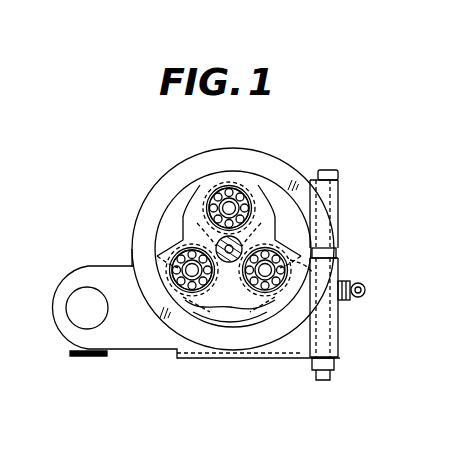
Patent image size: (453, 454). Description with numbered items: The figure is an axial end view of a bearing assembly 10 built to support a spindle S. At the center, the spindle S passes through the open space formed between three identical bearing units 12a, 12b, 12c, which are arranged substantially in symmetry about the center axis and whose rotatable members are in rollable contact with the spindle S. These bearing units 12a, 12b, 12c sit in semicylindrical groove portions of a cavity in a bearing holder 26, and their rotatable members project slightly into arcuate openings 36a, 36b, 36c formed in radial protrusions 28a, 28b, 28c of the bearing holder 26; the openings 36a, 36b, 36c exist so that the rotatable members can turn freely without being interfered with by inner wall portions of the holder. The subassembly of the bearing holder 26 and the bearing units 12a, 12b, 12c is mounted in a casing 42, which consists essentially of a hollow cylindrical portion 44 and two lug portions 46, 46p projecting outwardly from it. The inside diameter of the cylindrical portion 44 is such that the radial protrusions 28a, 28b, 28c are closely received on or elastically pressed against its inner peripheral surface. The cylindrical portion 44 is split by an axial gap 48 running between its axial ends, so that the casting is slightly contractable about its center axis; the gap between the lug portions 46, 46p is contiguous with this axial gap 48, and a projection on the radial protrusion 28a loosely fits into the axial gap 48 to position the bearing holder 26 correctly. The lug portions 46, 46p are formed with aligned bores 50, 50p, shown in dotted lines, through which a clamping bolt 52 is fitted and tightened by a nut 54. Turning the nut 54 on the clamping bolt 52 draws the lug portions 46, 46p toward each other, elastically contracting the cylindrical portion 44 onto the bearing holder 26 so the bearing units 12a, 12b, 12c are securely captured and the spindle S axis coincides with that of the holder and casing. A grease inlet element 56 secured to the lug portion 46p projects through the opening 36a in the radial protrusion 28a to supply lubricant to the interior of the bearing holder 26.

The bearing assembly 10 is at (142, 185).
The bearing holder 26 is at (184, 213).
The spindle S is at (197, 250).
The cylindrical portion 44 is at (132, 233).
The arcuate opening 36a is at (283, 318).
The arcuate opening 36b is at (203, 176).
The arcuate opening 36c is at (163, 265).
The bearing unit 12a is at (288, 299).
The bearing unit 12b is at (271, 187).
The bearing unit 12c is at (192, 300).
The radial protrusion 28a is at (316, 272).
The radial protrusion 28b is at (243, 186).
The radial protrusion 28c is at (183, 296).
The casing 42 is at (218, 359).
The lug portion 46 is at (338, 190).
The lug portion 46p is at (338, 346).
The axial gap 48 is at (336, 254).
The bore 50 is at (326, 205).
The bore 50p is at (330, 318).
The clamping bolt 52 is at (331, 170).
The nut 54 is at (333, 368).
The grease inlet element 56 is at (365, 291).